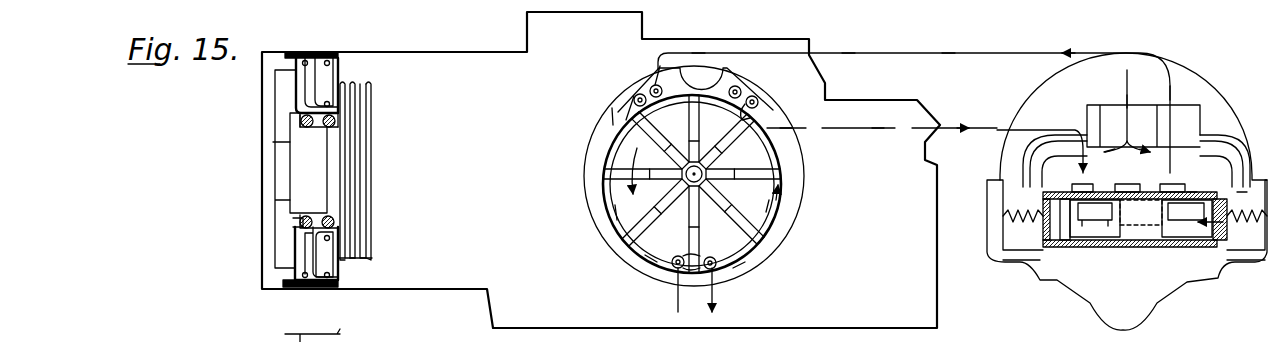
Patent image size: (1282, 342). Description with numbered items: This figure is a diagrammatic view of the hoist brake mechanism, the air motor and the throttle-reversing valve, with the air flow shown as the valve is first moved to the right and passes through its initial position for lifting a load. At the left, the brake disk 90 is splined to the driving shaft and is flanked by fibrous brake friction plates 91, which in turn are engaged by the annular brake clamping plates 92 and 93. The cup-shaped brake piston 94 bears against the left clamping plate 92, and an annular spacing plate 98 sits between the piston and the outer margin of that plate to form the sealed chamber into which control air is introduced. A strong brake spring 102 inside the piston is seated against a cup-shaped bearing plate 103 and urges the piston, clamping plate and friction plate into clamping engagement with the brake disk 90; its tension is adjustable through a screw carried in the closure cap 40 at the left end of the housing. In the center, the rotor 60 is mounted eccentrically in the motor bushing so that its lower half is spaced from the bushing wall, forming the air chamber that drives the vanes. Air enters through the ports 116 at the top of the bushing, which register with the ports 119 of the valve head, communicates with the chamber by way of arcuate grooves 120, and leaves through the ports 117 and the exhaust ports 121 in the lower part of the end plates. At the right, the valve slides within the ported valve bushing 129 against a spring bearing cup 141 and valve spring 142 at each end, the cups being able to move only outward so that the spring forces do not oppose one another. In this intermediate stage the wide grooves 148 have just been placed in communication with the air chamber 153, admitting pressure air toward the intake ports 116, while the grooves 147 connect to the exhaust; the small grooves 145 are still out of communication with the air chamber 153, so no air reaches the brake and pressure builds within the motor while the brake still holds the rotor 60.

The closure cap 40 is at (272, 282).
The rotor 60 is at (758, 200).
The brake disk 90 is at (358, 182).
The brake friction plates 91 is at (348, 213).
The left brake clamping plate 92 is at (342, 260).
The right brake clamping plate 93 is at (362, 258).
The brake piston 94 is at (305, 262).
The spacing plate 98 is at (330, 263).
The brake spring 102 is at (334, 127).
The bearing plate 103 is at (303, 157).
The air ports 116 is at (640, 96).
The air ports 117 is at (751, 102).
The ports 119 is at (627, 240).
The arcuate grooves 120 is at (1137, 230).
The exhaust ports 121 is at (723, 257).
The valve bushing 129 is at (1143, 180).
The spring bearing cup 141 is at (1047, 253).
The valve spring 142 is at (1243, 238).
The small grooves 145 is at (1193, 197).
The grooves 147 is at (1082, 228).
The grooves 148 is at (1162, 227).
The air chamber 153 is at (1243, 197).